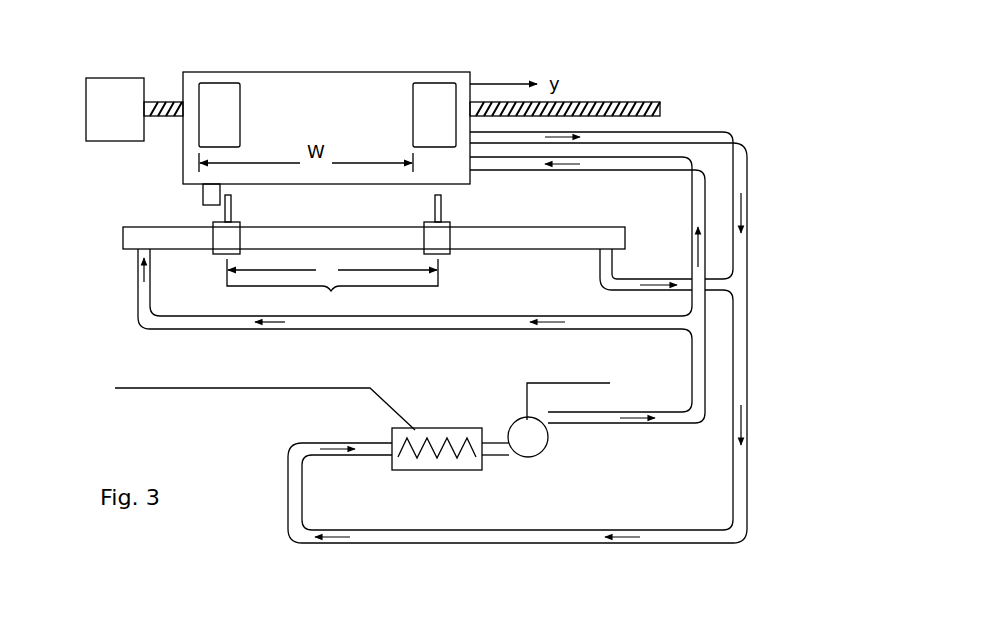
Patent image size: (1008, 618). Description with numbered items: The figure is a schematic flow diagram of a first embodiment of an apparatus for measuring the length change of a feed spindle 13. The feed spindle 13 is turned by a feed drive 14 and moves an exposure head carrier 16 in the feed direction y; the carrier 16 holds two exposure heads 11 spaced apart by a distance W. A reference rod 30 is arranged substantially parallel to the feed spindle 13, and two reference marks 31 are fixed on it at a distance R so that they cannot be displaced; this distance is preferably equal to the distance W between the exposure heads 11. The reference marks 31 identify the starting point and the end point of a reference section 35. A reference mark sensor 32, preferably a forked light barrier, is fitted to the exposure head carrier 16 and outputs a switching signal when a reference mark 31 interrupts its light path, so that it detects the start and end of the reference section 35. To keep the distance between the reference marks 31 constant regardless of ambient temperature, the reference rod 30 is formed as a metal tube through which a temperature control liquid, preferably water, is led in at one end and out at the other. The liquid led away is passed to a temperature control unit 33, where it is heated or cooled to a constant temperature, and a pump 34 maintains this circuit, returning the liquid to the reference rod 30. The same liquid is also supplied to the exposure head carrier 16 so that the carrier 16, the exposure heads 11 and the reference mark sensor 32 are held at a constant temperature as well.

The exposure heads 11 is at (433, 93).
The feed spindle 13 is at (613, 102).
The feed drive 14 is at (101, 131).
The exposure head carrier 16 is at (248, 80).
The reference rod 30 is at (131, 238).
The reference marks 31 is at (442, 218).
The reference mark sensor 32 is at (203, 196).
The temperature control unit 33 is at (407, 458).
The pump 34 is at (531, 441).
The reference section 35 is at (332, 287).